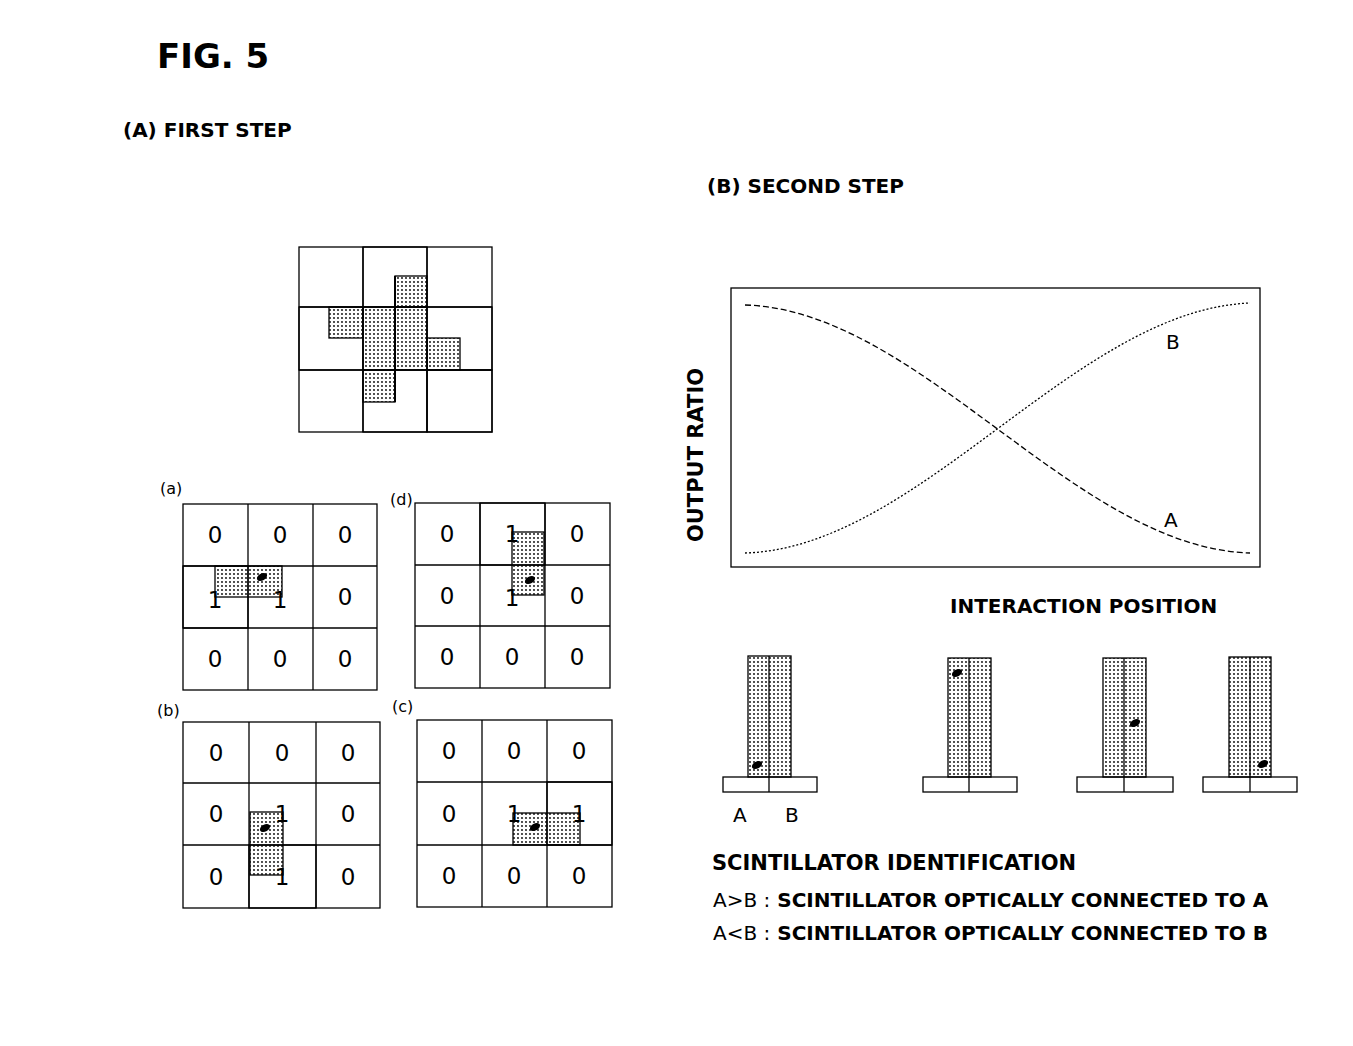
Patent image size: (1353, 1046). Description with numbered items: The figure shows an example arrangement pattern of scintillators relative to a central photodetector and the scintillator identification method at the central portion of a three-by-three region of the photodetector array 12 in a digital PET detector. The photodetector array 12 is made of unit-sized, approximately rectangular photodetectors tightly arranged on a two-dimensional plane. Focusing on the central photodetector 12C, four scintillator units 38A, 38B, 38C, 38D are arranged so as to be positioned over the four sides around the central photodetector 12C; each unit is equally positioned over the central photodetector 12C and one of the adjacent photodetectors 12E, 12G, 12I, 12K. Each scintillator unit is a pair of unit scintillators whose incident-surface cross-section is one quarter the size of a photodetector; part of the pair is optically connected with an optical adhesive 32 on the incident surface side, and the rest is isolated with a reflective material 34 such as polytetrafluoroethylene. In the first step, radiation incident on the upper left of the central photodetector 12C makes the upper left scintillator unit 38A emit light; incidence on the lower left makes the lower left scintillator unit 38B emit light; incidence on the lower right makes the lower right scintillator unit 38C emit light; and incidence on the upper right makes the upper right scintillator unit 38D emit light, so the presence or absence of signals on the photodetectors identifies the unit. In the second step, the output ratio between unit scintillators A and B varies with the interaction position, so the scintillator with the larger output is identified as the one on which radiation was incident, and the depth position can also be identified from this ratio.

The photodetector array 12 is at (295, 376).
The central photodetector 12C is at (404, 373).
The photodetector 12E is at (299, 358).
The photodetector 12G is at (373, 433).
The photodetector 12I is at (493, 322).
The photodetector 12K is at (415, 247).
The optical adhesive 32 is at (417, 302).
The reflective material 34 is at (430, 322).
The upper left scintillator unit 38A is at (329, 324).
The lower left scintillator unit 38B is at (373, 403).
The lower right scintillator unit 38C is at (460, 352).
The upper right scintillator unit 38D is at (402, 276).